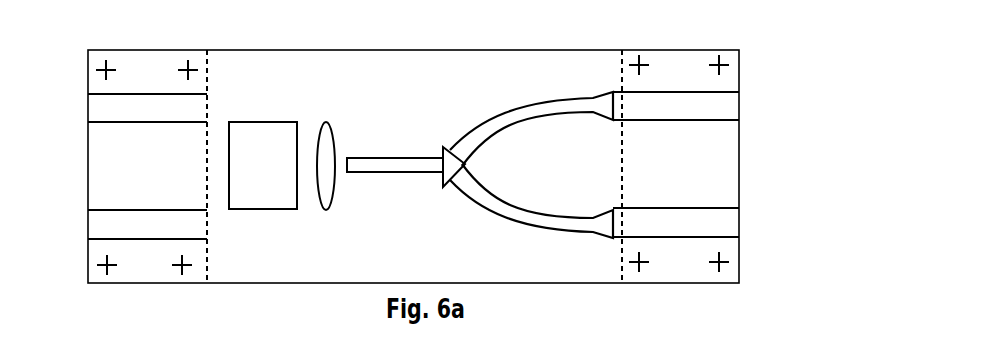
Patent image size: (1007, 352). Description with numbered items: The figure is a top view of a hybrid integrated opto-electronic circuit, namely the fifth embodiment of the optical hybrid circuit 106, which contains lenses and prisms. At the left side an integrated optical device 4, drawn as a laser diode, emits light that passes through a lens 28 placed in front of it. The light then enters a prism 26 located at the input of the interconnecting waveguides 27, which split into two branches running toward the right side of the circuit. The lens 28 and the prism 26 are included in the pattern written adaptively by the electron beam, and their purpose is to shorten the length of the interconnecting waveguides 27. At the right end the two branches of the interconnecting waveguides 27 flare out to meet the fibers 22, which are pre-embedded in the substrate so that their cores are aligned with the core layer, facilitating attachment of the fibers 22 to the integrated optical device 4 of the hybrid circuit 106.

The optical hybrid circuit 106 is at (103, 166).
The integrated optical device 4 is at (260, 196).
The lens 28 is at (325, 196).
The prism 26 is at (445, 147).
The interconnecting waveguides 27 is at (525, 113).
The fibers 22 is at (732, 104).